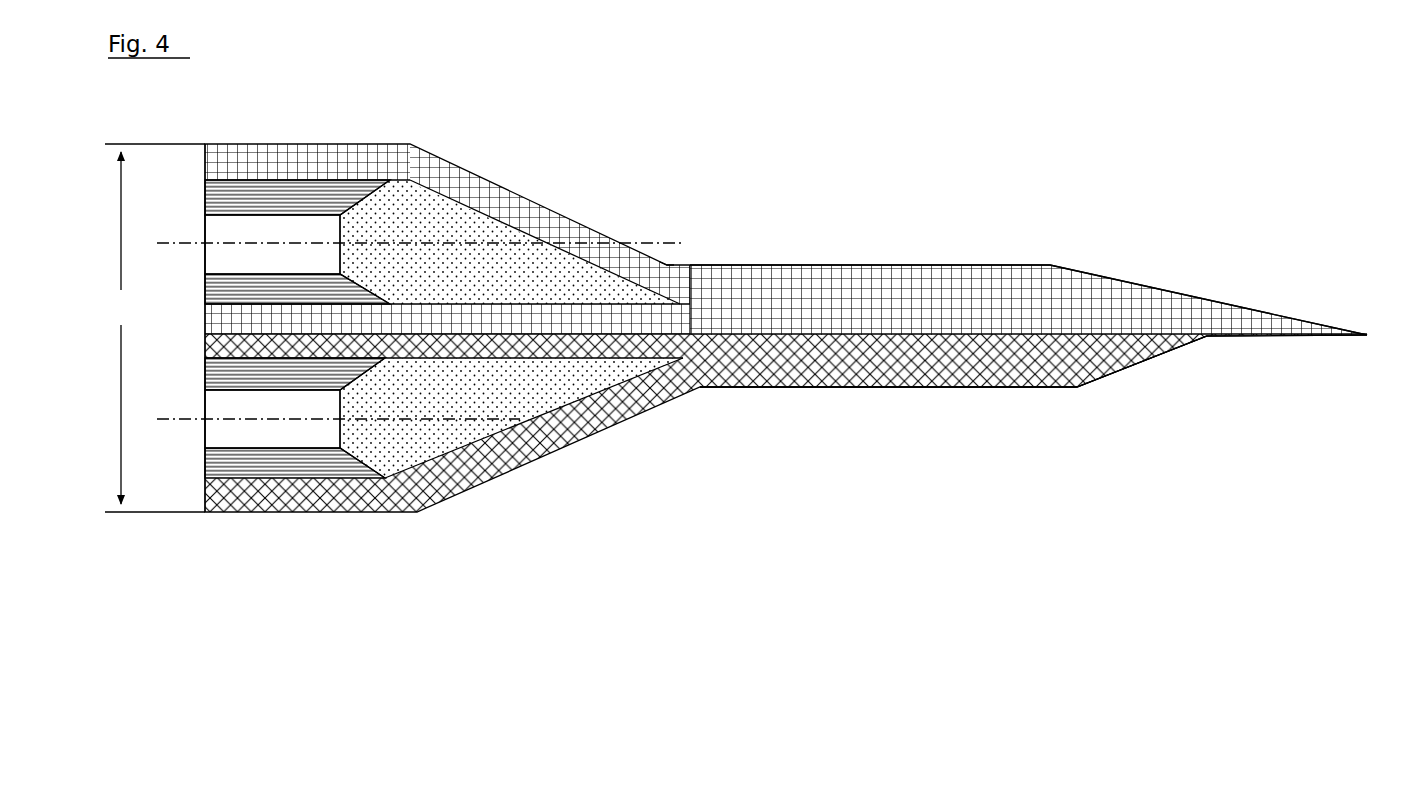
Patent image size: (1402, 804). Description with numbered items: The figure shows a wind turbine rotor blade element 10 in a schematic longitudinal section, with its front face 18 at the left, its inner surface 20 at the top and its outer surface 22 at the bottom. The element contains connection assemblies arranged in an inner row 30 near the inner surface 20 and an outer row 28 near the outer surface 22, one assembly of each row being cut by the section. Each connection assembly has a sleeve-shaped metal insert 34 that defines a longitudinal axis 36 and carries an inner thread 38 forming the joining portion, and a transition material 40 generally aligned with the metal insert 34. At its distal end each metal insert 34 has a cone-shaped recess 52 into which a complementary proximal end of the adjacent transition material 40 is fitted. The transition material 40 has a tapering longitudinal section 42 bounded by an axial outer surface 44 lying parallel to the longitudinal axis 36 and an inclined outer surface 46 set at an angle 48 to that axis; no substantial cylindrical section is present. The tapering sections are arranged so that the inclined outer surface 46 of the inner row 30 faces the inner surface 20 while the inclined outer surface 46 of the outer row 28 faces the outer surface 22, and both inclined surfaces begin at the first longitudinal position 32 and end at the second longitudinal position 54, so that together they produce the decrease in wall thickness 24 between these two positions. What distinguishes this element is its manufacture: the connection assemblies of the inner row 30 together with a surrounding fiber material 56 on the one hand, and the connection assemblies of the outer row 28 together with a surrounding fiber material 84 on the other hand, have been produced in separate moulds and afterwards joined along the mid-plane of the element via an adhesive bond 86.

The wind turbine rotor blade element 10 is at (902, 134).
The front face 18 is at (205, 495).
The inner surface 20 is at (448, 162).
The outer surface 22 is at (470, 490).
The wall thickness 24 is at (154, 328).
The outer row 28 is at (182, 377).
The inner row 30 is at (182, 195).
The first longitudinal position 32 is at (402, 148).
The metal insert 34 is at (252, 192).
The longitudinal axis 36 is at (168, 247).
The inner thread 38 is at (222, 272).
The transition material 40 is at (407, 220).
The tapering longitudinal section 42 is at (540, 275).
The axial outer surface 44 is at (692, 318).
The inclined outer surface 46 is at (482, 200).
The angle 48 is at (490, 225).
The cone-shaped recess 52 is at (396, 198).
The second longitudinal position 54 is at (663, 265).
The fiber material 56 is at (887, 270).
The fiber material 84 is at (870, 368).
The adhesive bond 86 is at (1015, 350).